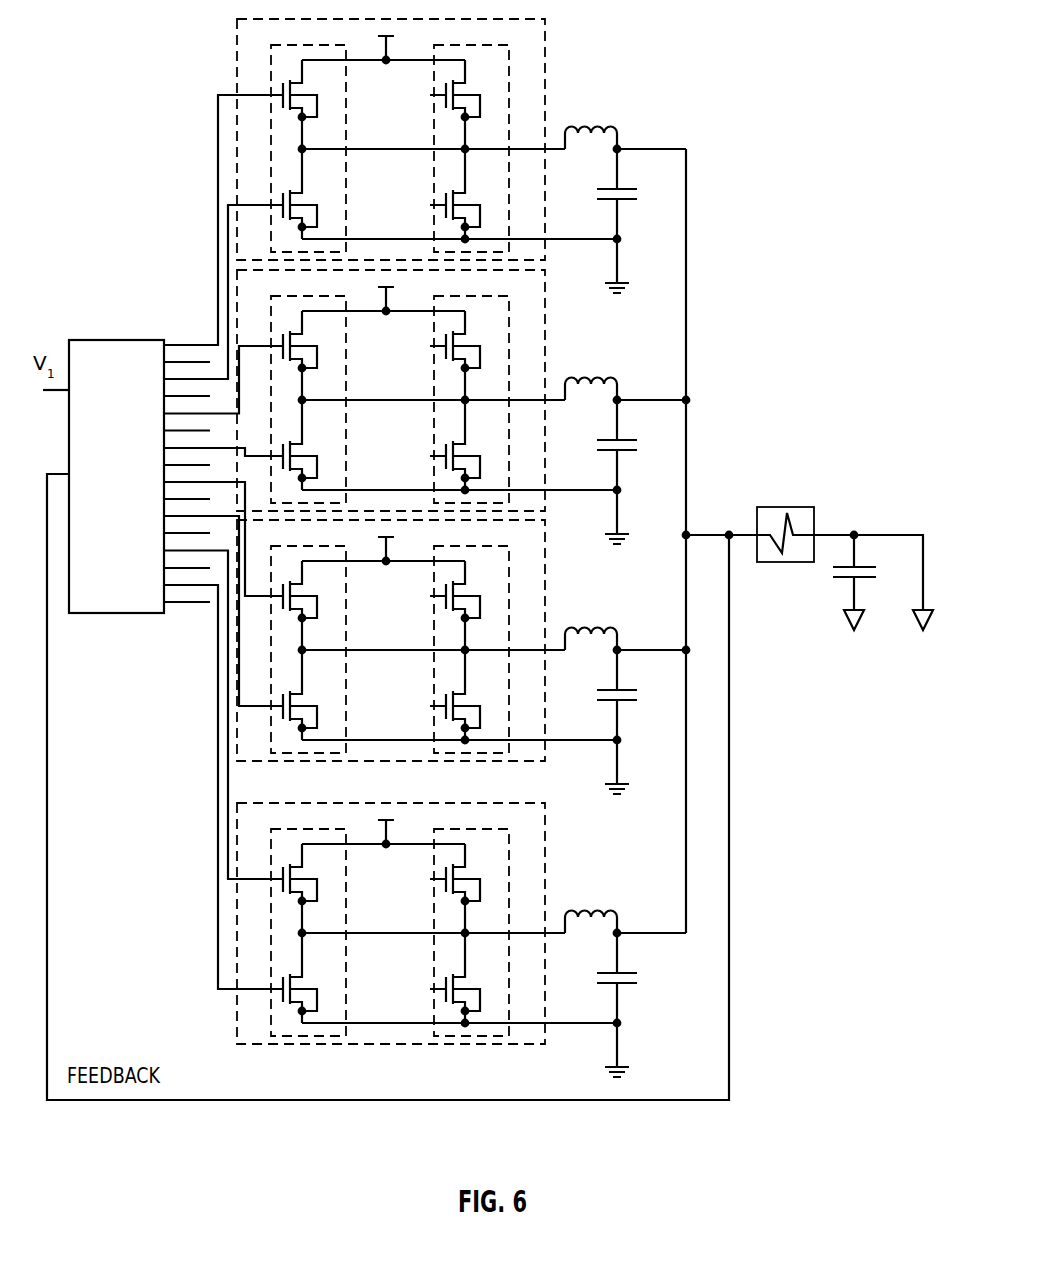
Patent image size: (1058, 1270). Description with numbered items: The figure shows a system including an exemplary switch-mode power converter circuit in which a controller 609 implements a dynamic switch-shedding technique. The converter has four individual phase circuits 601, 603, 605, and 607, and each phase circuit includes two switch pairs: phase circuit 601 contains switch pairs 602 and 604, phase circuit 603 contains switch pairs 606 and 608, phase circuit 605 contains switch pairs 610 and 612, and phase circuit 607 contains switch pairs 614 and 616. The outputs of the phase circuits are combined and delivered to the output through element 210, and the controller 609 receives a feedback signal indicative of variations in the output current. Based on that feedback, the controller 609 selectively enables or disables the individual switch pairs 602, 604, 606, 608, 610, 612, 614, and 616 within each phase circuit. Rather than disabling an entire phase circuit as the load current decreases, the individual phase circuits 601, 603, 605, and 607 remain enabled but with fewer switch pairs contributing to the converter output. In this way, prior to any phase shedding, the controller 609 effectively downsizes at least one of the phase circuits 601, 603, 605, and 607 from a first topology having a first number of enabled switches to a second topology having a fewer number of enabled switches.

The phase circuit 601 is at (272, 40).
The switch pair 602 is at (303, 66).
The switch pair 604 is at (505, 66).
The phase circuit 603 is at (272, 291).
The switch pair 606 is at (303, 317).
The switch pair 608 is at (505, 317).
The phase circuit 605 is at (274, 543).
The switch pair 610 is at (303, 566).
The switch pair 612 is at (505, 566).
The phase circuit 607 is at (272, 827).
The switch pair 614 is at (303, 850).
The switch pair 616 is at (505, 850).
The controller 609 is at (136, 509).
The load 210 is at (782, 507).